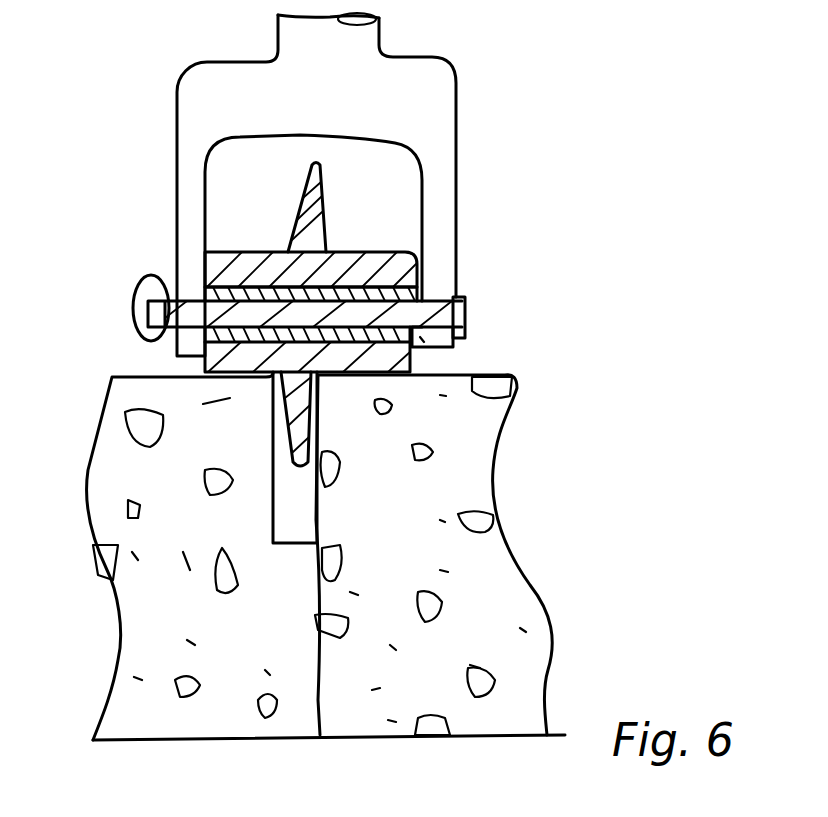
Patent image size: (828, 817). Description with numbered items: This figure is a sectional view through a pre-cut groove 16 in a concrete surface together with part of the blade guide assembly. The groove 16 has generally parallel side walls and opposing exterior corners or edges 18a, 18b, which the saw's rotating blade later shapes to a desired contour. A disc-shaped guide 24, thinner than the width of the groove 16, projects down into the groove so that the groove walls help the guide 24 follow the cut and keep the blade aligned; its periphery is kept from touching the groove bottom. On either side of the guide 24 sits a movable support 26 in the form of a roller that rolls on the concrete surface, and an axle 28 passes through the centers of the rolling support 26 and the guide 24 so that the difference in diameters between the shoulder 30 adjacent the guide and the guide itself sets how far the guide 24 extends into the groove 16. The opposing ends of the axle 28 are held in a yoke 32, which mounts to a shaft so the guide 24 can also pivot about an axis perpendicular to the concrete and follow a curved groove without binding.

The pre-cut groove 16 is at (507, 372).
The exterior corner or edge of the groove 18a is at (273, 380).
The exterior corner or edge of the groove 18b is at (335, 400).
The guide 24 is at (326, 192).
The movable support 26 is at (373, 250).
The axle 28 is at (145, 310).
The nut and washers 30 is at (406, 258).
The yoke 32 is at (458, 112).